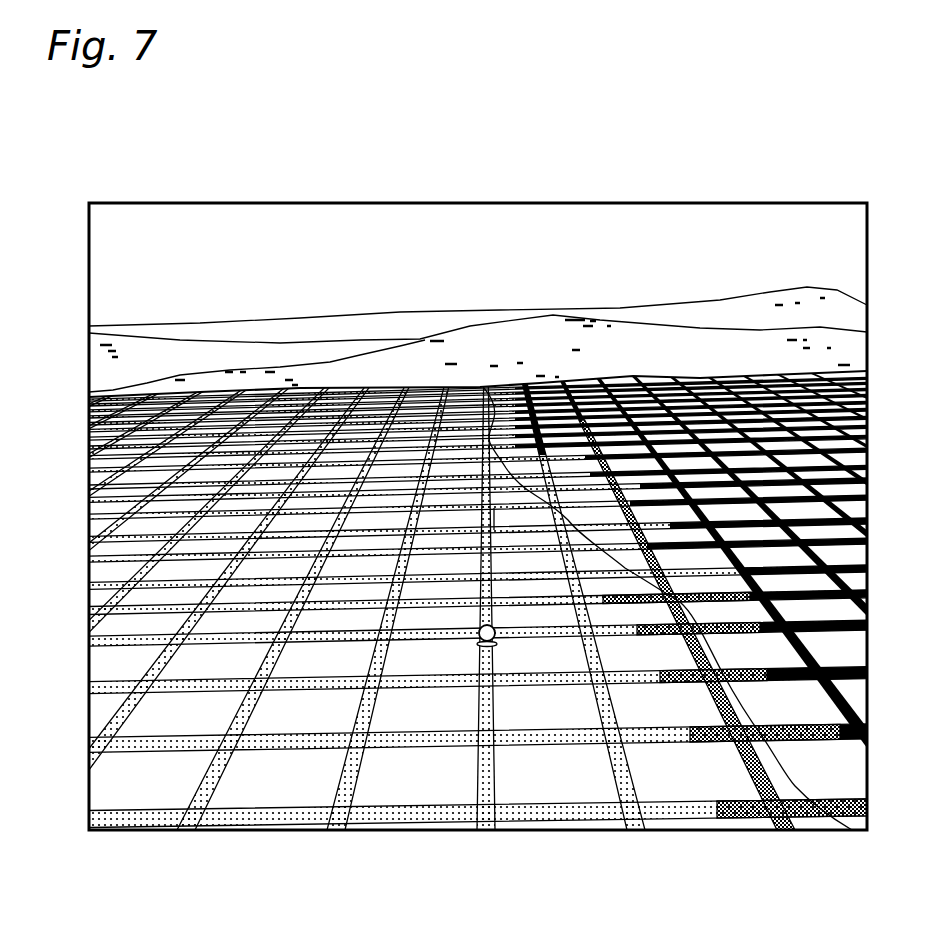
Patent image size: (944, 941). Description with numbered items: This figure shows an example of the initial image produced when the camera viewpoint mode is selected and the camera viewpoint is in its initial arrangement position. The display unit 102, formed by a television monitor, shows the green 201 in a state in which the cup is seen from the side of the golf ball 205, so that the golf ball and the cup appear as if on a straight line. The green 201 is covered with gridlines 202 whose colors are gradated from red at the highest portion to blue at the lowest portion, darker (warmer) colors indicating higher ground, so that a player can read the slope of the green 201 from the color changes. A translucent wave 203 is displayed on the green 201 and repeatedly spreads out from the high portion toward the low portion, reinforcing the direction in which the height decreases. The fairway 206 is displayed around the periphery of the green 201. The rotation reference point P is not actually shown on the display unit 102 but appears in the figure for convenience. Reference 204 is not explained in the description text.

The display unit 102 is at (680, 203).
The green 201 is at (402, 387).
The gridlines 202 is at (457, 388).
The translucent wave 203 is at (712, 652).
The road 204 is at (487, 458).
The golf ball 205 is at (481, 627).
The fairway 206 is at (478, 328).
The rotation reference point P is at (493, 517).